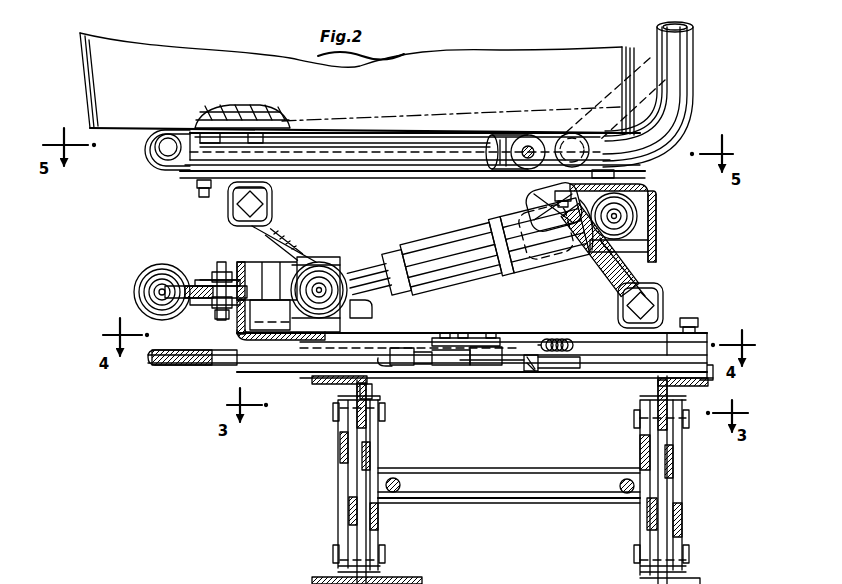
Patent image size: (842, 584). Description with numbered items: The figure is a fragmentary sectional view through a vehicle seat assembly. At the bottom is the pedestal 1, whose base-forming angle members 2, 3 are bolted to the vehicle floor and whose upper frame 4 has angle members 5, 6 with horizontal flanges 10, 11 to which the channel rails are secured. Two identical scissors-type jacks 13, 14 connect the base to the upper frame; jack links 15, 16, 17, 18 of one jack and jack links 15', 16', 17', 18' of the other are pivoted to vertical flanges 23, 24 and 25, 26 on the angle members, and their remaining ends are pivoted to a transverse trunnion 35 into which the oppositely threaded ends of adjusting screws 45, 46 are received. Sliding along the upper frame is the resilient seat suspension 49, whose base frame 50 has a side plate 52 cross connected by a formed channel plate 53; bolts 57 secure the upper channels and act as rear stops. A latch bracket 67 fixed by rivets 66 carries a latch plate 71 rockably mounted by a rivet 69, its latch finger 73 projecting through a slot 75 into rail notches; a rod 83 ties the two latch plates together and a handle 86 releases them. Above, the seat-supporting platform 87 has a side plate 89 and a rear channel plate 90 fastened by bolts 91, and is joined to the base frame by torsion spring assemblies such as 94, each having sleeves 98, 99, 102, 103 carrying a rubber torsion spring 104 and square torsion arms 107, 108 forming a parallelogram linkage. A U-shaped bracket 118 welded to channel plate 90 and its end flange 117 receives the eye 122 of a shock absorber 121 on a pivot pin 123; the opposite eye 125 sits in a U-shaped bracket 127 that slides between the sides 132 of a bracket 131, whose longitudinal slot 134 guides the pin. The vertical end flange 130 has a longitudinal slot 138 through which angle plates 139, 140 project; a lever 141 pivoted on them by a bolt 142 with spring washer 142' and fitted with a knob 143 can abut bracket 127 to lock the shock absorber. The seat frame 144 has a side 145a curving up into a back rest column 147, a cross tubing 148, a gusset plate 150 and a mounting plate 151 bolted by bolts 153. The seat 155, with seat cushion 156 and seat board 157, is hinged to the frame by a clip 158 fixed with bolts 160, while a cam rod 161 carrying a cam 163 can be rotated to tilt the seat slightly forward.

The pedestal 1 is at (296, 521).
The base-forming angle member 2 is at (320, 578).
The base-forming angle member 3 is at (705, 583).
The upper frame 4 is at (326, 387).
The angle member 5 is at (345, 385).
The angle member 6 is at (702, 385).
The horizontal flange 10 is at (312, 383).
The horizontal flange 11 is at (714, 374).
The scissors-type jack 13 is at (687, 532).
The scissors-type jack 14 is at (336, 531).
The jack link 15 is at (697, 517).
The jack link 15' is at (394, 520).
The jack link 16 is at (625, 516).
The jack link 16' is at (318, 508).
The jack link 17 is at (675, 485).
The jack link 17' is at (390, 454).
The jack link 18 is at (645, 485).
The jack link 18' is at (319, 447).
The vertical flange 23 is at (652, 572).
The vertical flange 24 is at (368, 572).
The vertical flange 25 is at (656, 383).
The vertical flange 26 is at (373, 387).
The trunnion 35 is at (518, 468).
The adjusting screw 45 is at (396, 478).
The adjusting screw 46 is at (626, 478).
The seat suspension 49 is at (695, 282).
The base frame 50 is at (709, 333).
The side plate 52 is at (514, 333).
The formed channel plate 53 is at (245, 344).
The bolt 57 is at (687, 318).
The rivet 66 is at (444, 334).
The latch bracket 67 is at (488, 334).
The rivet 69 is at (469, 338).
The latch plate 71 is at (469, 372).
The latch finger 73 is at (532, 372).
The slot 75 is at (524, 378).
The rod 83 is at (425, 372).
The handle 86 is at (190, 372).
The seat-supporting platform 87 is at (658, 232).
The side plate 89 is at (612, 185).
The formed channel plate 90 is at (657, 242).
The bolt 91 is at (598, 171).
The torsion spring assembly 94 is at (585, 272).
The sleeve 98 is at (372, 312).
The sleeve 99 is at (658, 312).
The sleeve 102 is at (272, 196).
The sleeve 103 is at (530, 196).
The rubber torsion spring 104 is at (228, 206).
The torsion arm 107 is at (603, 274).
The torsion arm 108 is at (286, 222).
The end flange 117 is at (650, 207).
The U-shaped bracket 118 is at (658, 228).
The shock absorber 121 is at (422, 240).
The eye 122 is at (622, 244).
The pivot pin 123 is at (650, 188).
The eye 125 is at (333, 266).
The U-shaped bracket 127 is at (343, 274).
The vertical end flange 130 is at (237, 322).
The U-shaped bracket 131 is at (270, 346).
The side 132 is at (288, 246).
The longitudinal slot 134 is at (270, 290).
The longitudinal slot 138 is at (267, 315).
The angle plate 139 is at (198, 276).
The angle plate 140 is at (212, 300).
The lever 141 is at (192, 308).
The bolt 142 is at (216, 273).
The spring washer 142' is at (203, 252).
The knob 143 is at (134, 292).
The seat frame 144 is at (353, 128).
The side 145a is at (400, 120).
The back rest column 147 is at (694, 32).
The cross tubing 148 is at (574, 136).
The gusset plate 150 is at (683, 82).
The mounting plate 151 is at (410, 168).
The bolt 153 is at (180, 172).
The seat 155 is at (82, 62).
The seat cushion 156 is at (238, 72).
The seat board 157 is at (293, 130).
The clip 158 is at (147, 150).
The bolt 160 is at (222, 140).
The cam rod 161 is at (530, 146).
The cam 163 is at (500, 138).